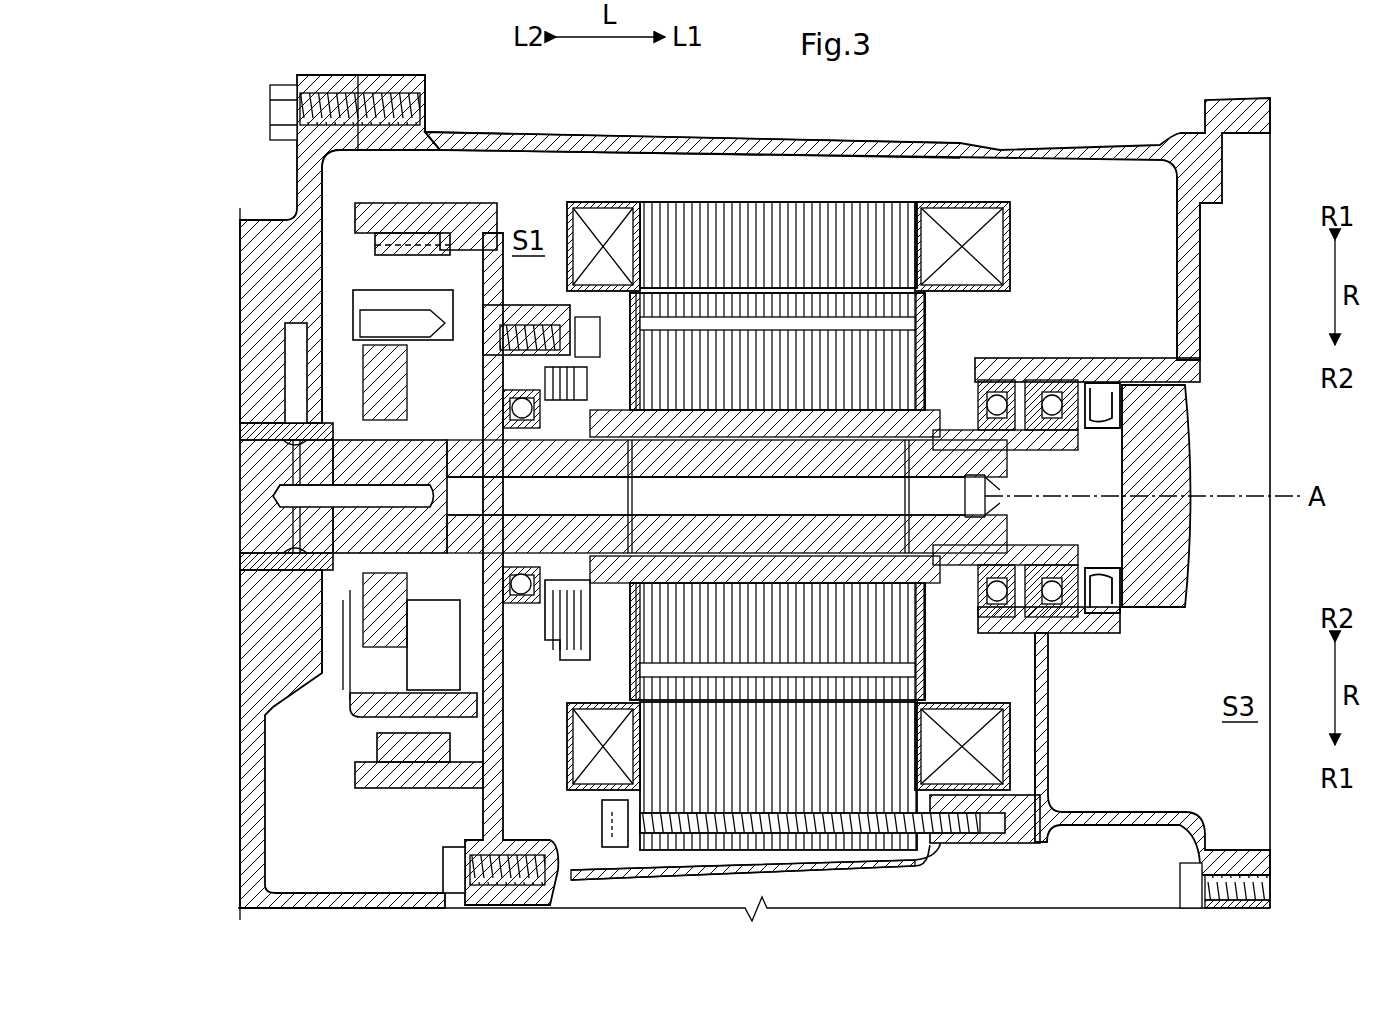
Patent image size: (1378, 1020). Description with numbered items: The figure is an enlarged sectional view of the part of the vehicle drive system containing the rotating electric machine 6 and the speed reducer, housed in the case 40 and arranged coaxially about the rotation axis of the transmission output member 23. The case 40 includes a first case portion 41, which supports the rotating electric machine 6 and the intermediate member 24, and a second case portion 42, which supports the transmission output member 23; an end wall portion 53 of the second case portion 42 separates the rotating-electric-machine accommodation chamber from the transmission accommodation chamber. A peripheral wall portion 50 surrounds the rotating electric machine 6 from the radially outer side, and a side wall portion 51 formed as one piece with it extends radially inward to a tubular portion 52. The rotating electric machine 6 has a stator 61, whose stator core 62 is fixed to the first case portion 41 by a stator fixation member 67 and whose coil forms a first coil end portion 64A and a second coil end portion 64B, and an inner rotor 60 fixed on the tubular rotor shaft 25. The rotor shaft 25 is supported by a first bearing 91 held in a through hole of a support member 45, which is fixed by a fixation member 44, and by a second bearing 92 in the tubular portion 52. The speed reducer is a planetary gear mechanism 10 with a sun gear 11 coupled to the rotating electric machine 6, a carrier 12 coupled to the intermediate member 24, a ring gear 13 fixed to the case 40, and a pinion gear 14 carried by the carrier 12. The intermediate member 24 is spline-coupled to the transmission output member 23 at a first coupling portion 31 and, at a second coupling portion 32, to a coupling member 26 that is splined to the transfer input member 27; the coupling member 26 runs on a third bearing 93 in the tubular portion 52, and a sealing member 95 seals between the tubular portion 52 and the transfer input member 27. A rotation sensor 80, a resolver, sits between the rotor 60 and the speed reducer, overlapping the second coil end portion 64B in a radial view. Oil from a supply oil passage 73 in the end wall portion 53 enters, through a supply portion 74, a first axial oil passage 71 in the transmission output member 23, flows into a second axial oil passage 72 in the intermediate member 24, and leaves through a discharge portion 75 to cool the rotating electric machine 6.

The rotating electric machine 6 is at (985, 672).
The planetary gear mechanism 10 is at (350, 245).
The sun gear 11 is at (438, 600).
The carrier 12 is at (372, 708).
The ring gear 13 is at (418, 735).
The pinion gear 14 is at (425, 258).
The transmission output member 23 is at (250, 460).
The intermediate member 24 is at (737, 537).
The rotor shaft 25 is at (868, 580).
The coupling member 26 is at (1057, 522).
The transfer input member 27 is at (1170, 625).
The first coupling portion 31 is at (383, 545).
The second coupling portion 32 is at (962, 552).
The case 40 is at (490, 132).
The first case portion 41 is at (575, 140).
The second case portion 42 is at (281, 621).
The fixation member 44 is at (447, 873).
The support member 45 is at (503, 728).
The peripheral wall portion 50 is at (770, 140).
The side wall portion 51 is at (1185, 240).
The tubular portion 52 is at (1085, 625).
The end wall portion 53 is at (250, 278).
The rotor 60 is at (927, 347).
The stator 61 is at (700, 200).
The stator core 62 is at (853, 800).
The first coil end portion 64A is at (995, 758).
The second coil end portion 64B is at (592, 778).
The stator fixation member 67 is at (618, 845).
The first axial oil passage 71 is at (268, 511).
The second axial oil passage 72 is at (742, 490).
The supply oil passage 73 is at (290, 350).
The supply portion 74 is at (275, 495).
The discharge portion 75 is at (632, 440).
The rotation sensor 80 is at (555, 641).
The first bearing 91 is at (522, 412).
The second bearing 92 is at (978, 397).
The third bearing 93 is at (1128, 392).
The sealing member 95 is at (1125, 595).